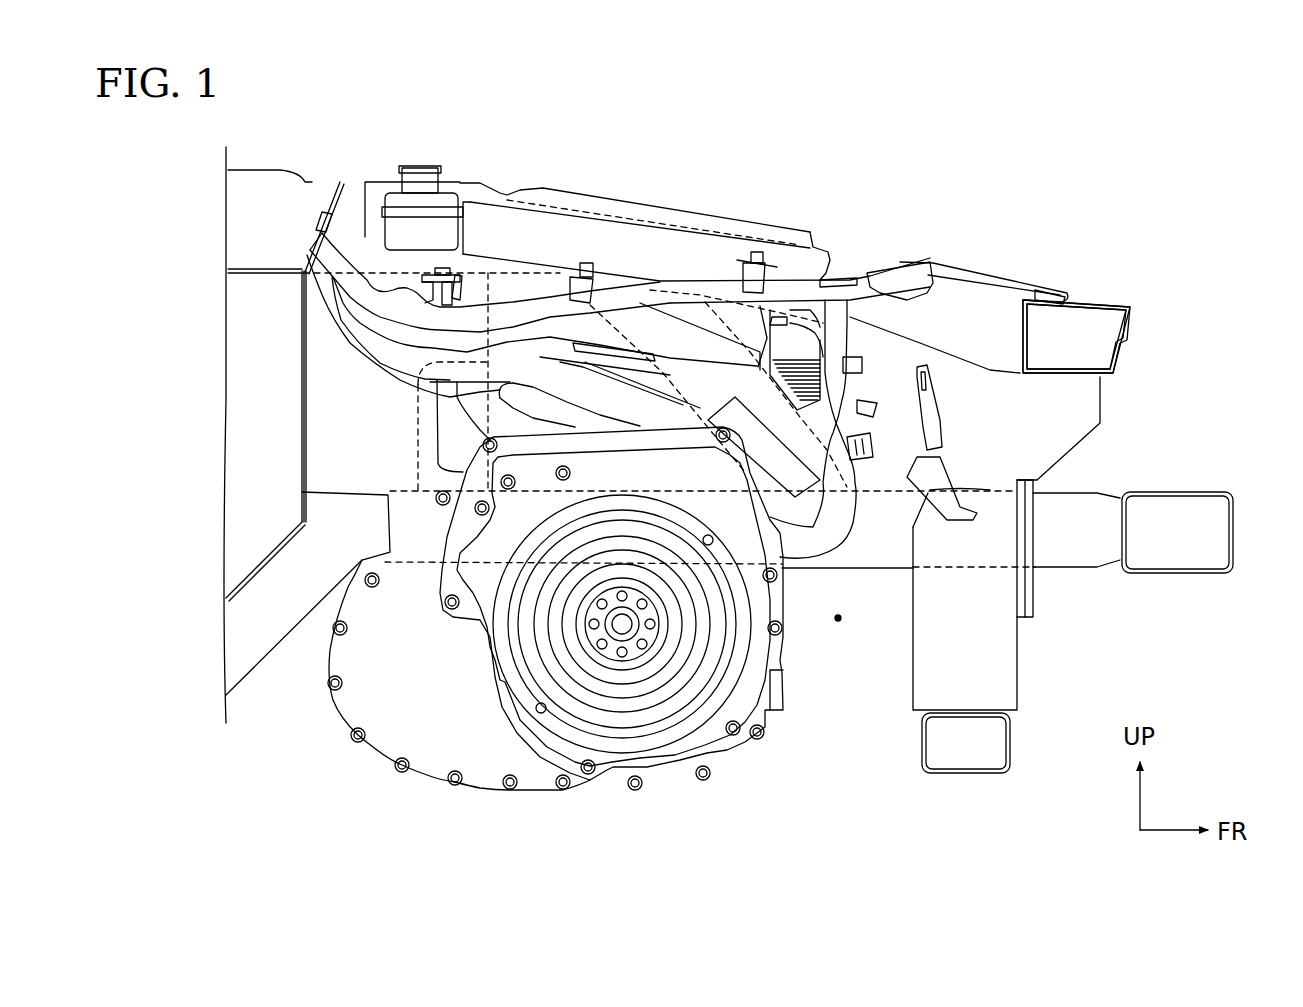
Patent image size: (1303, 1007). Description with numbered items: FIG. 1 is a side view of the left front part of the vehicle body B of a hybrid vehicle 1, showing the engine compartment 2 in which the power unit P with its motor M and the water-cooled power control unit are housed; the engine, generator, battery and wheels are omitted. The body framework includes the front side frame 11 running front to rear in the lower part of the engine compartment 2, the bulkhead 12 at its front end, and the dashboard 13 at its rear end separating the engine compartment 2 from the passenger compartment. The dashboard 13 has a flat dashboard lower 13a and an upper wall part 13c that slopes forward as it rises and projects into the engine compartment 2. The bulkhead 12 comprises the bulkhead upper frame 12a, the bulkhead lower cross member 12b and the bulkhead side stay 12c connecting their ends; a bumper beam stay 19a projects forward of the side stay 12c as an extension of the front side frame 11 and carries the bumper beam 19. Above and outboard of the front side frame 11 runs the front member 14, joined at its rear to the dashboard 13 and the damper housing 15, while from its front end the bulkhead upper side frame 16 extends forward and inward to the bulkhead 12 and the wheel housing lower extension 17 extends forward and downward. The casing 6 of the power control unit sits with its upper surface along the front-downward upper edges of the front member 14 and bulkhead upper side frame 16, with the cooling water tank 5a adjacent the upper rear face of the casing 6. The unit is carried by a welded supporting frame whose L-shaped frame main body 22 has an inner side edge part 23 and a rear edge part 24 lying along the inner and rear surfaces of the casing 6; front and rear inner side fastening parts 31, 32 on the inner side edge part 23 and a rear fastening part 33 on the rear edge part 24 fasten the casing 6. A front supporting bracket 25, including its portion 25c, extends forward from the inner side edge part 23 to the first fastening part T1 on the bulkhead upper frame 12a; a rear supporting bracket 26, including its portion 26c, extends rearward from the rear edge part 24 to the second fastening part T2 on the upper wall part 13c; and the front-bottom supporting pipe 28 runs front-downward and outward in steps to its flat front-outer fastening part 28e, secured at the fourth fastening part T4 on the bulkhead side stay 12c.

The hybrid vehicle 1 is at (1125, 172).
The engine compartment 2 is at (838, 620).
The cooling water tank 5a is at (397, 200).
The casing 6 is at (810, 232).
The front side frame 11 is at (880, 553).
The bulkhead 12 is at (1100, 400).
The bulkhead upper frame 12a is at (1122, 355).
The bulkhead lower cross member 12b is at (1012, 742).
The bulkhead side stay 12c is at (1017, 667).
The dashboard 13 is at (312, 375).
The dashboard lower 13a is at (307, 417).
The upper wall part 13c is at (311, 217).
The front member 14 is at (470, 193).
The damper housing 15 is at (323, 450).
The bulkhead upper side frame 16 is at (857, 267).
The wheel housing lower extension 17 is at (690, 393).
The bumper beam 19 is at (1203, 573).
The bumper beam stay 19a is at (1083, 560).
The frame main body 22 is at (670, 277).
The inner side edge part 23 is at (693, 293).
The rear edge part 24 is at (407, 290).
The front supporting bracket 25 is at (958, 267).
The mount plate flange 25c is at (1057, 287).
The rear supporting bracket 26 is at (333, 277).
The hose end 26c is at (325, 230).
The front-bottom supporting pipe 28 is at (910, 433).
The front-outer fastening part 28e is at (975, 513).
The front inner side fastening part 31 is at (762, 260).
The rear inner side fastening part 32 is at (597, 263).
The rear fastening part 33 is at (453, 290).
The vehicle body B is at (1132, 307).
The motor M is at (663, 765).
The power unit P is at (483, 790).
The first fastening part T1 is at (1050, 303).
The second fastening part T2 is at (322, 212).
The fourth fastening part T4 is at (977, 520).